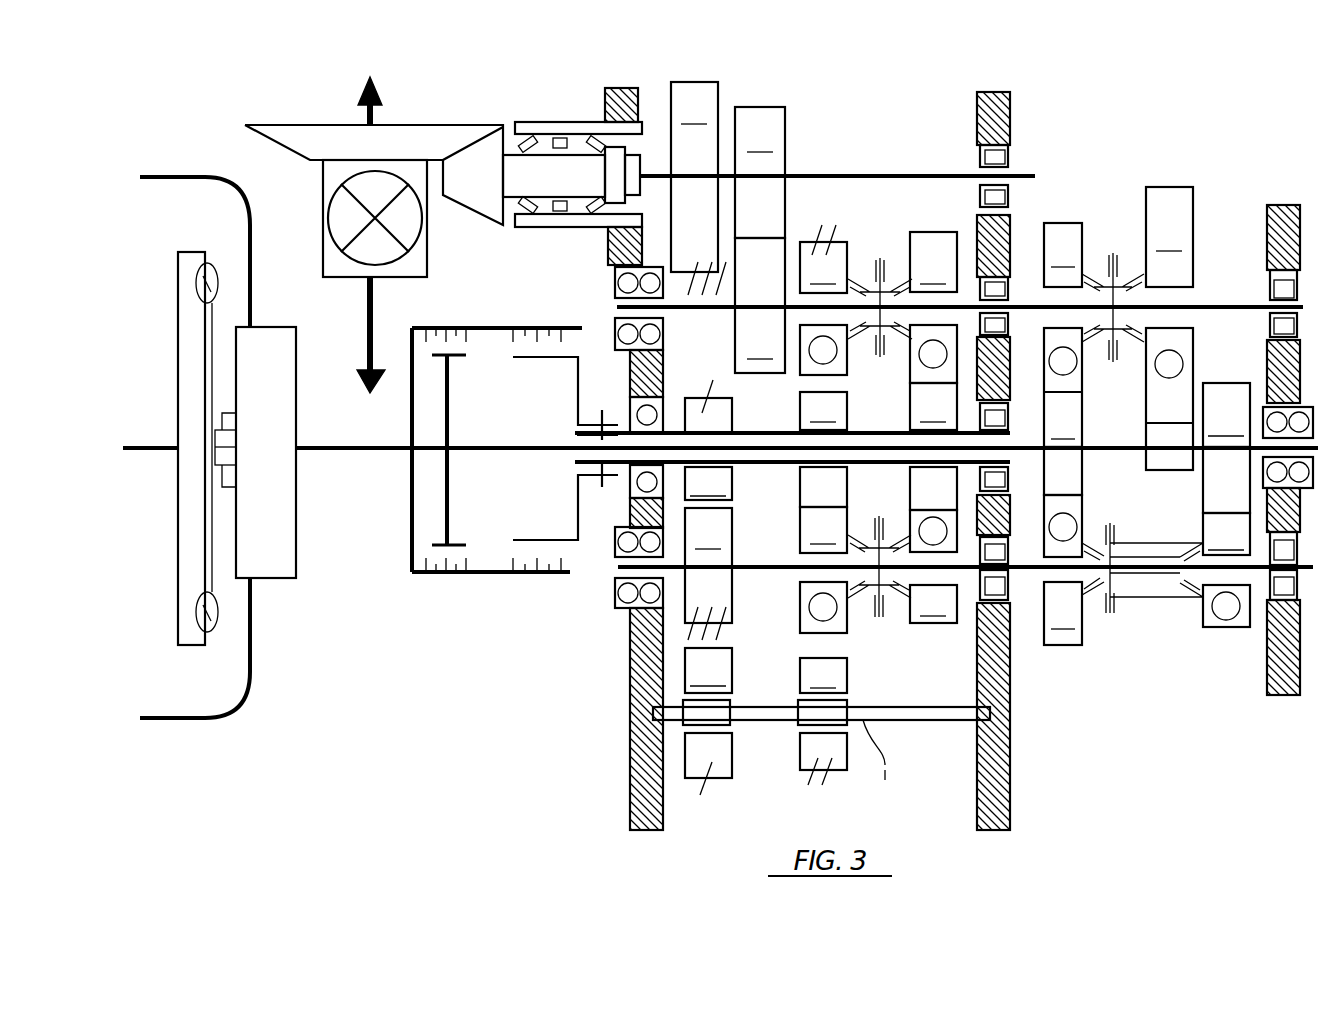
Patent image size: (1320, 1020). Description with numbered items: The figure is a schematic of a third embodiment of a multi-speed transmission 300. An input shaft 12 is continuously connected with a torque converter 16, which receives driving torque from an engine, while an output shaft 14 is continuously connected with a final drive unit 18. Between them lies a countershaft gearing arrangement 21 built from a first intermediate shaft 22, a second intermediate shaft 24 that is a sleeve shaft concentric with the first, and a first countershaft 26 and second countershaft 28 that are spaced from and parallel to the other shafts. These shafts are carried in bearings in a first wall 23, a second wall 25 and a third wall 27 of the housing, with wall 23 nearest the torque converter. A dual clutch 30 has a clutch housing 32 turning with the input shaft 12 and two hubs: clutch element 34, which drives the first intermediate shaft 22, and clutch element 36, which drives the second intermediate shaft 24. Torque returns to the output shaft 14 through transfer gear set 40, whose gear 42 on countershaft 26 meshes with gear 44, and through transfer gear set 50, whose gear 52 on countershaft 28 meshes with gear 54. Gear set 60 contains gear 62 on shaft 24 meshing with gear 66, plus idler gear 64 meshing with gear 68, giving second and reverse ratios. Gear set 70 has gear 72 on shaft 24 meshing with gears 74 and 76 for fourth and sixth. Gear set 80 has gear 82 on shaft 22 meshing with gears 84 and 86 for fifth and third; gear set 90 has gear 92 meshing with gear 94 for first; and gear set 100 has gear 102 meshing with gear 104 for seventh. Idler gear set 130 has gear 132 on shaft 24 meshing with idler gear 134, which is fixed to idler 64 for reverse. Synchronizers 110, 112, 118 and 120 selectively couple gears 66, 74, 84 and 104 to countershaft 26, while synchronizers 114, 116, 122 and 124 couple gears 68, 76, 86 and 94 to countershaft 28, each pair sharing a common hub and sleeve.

The multi-speed transmission 300 is at (205, 140).
The input member 12 is at (312, 450).
The output member 14 is at (650, 165).
The torque converter 16 is at (178, 560).
The final drive unit 18 is at (462, 92).
The countershaft gearing arrangement 21 is at (1180, 424).
The first intermediate shaft 22 is at (487, 450).
The first wall 23 is at (630, 655).
The second intermediate shaft 24 is at (672, 430).
The second wall 25 is at (1005, 795).
The first countershaft 26 is at (753, 567).
The third wall 27 is at (1285, 695).
The second countershaft 28 is at (1220, 305).
The dual clutch 30 is at (486, 482).
The clutch housing 32 is at (483, 572).
The first clutch element 34 is at (443, 490).
The second clutch element 36 is at (549, 358).
The transfer gear set 40 is at (727, 152).
The transfer gear 42 is at (708, 574).
The transfer gear 44 is at (706, 72).
The transfer gear set 50 is at (797, 201).
The transfer gear 52 is at (760, 305).
The transfer gear 54 is at (760, 172).
The gear set 60 is at (823, 446).
The gear 62 is at (823, 411).
The idler gear 64 is at (823, 675).
The gear 66 is at (823, 530).
The gear 68 is at (823, 259).
The gear set 70 is at (933, 466).
The gear 72 is at (933, 406).
The gear 74 is at (925, 640).
The gear 76 is at (933, 262).
The gear set 80 is at (1086, 393).
The gear 82 is at (1063, 387).
The gear 84 is at (1063, 613).
The gear 86 is at (1063, 255).
The gear set 90 is at (1177, 204).
The gear 92 is at (1163, 460).
The gear 94 is at (1172, 183).
The gear set 100 is at (1218, 554).
The gear 102 is at (1226, 415).
The gear 104 is at (1226, 534).
The synchronizer 110 is at (860, 595).
The synchronizer 112 is at (872, 545).
The synchronizer 114 is at (863, 340).
The synchronizer 116 is at (898, 250).
The synchronizer 118 is at (1095, 605).
The synchronizer 120 is at (1125, 535).
The synchronizer 122 is at (1093, 347).
The synchronizer 124 is at (1128, 268).
The idler gear set 130 is at (821, 670).
The gear 132 is at (708, 483).
The idler gear 134 is at (708, 670).